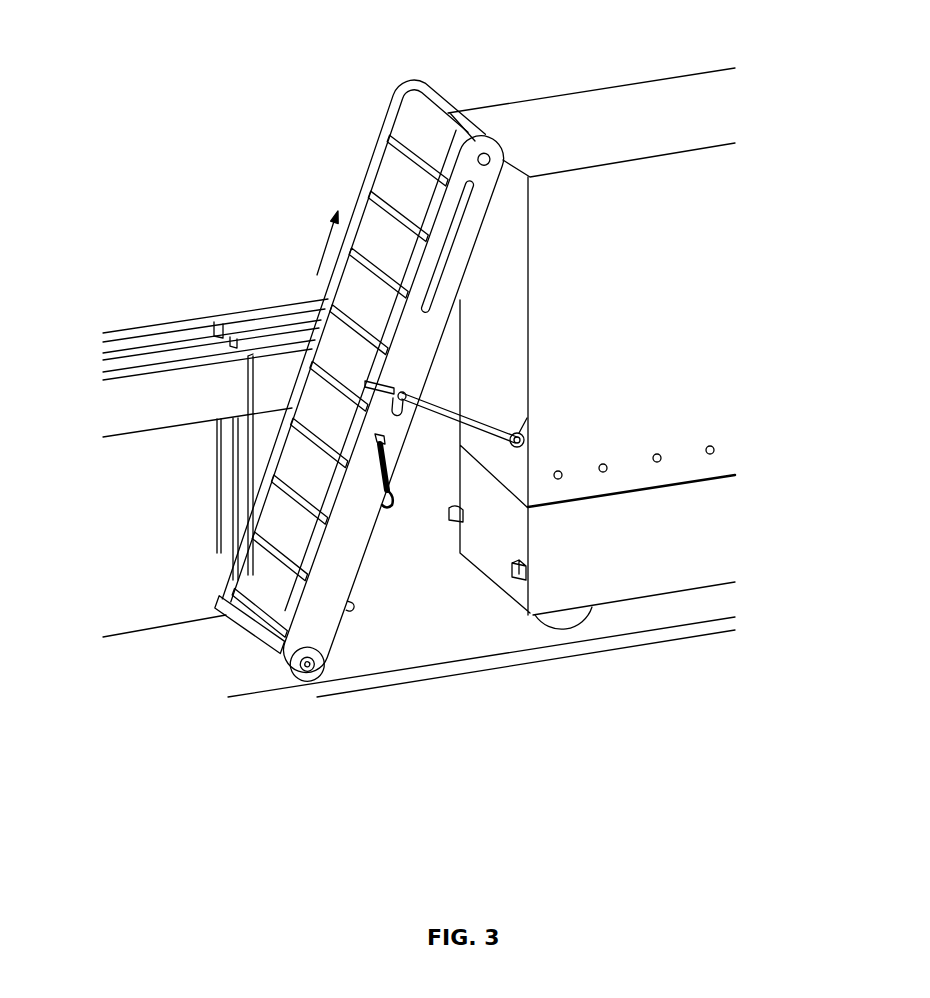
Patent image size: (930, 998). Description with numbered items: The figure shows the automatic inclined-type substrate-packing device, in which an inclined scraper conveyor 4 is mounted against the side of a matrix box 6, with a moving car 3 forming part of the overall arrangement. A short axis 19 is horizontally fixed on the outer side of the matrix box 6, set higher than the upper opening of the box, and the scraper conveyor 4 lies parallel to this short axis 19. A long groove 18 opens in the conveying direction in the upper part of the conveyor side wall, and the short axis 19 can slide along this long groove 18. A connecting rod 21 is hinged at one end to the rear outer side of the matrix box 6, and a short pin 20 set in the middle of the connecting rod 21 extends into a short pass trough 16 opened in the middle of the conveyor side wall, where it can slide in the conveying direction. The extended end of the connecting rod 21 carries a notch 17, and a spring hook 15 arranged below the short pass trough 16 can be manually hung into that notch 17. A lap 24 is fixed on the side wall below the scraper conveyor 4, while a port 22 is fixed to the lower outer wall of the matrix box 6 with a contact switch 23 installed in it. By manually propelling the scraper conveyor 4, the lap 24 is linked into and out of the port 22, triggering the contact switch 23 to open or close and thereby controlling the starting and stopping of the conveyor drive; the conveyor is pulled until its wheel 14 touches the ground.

The moving car 3 is at (590, 568).
The scraper conveyor 4 is at (240, 591).
The matrix box 6 is at (665, 263).
The wheel 14 is at (300, 672).
The spring hook 15 is at (384, 482).
The short pass trough 16 is at (365, 383).
The notch 17 is at (398, 394).
The long grooves 18 is at (455, 221).
The short axis 19 is at (478, 157).
The short pin 20 is at (410, 393).
The connecting rod 21 is at (527, 418).
The port 22 is at (515, 575).
The contact switch 23 is at (519, 570).
The lap 24 is at (347, 611).